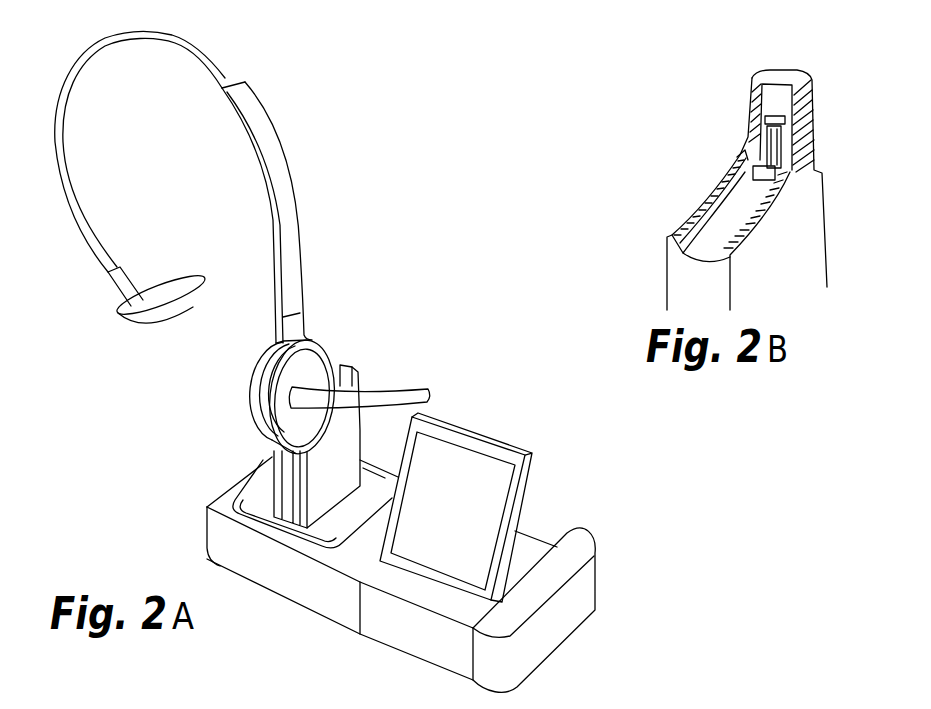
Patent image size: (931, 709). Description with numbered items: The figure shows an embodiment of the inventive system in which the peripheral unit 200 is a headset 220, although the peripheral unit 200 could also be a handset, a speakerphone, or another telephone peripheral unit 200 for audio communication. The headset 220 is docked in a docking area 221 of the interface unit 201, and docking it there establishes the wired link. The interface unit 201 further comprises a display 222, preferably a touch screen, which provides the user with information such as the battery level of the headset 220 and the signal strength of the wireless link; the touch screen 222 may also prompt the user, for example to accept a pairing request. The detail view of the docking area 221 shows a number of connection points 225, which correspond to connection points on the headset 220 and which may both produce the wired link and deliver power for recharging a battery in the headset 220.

In FIG. 2A, the peripheral unit 200 is at (299, 204).
In FIG. 2A, the headset 220 is at (287, 140).
In FIG. 2A, the interface unit 201 is at (200, 499).
In FIG. 2A, the docking area 221 is at (330, 458).
In FIG. 2B, the docking area 221 is at (752, 268).
In FIG. 2A, the display 222 is at (471, 520).
In FIG. 2B, the connection points 225 is at (768, 133).